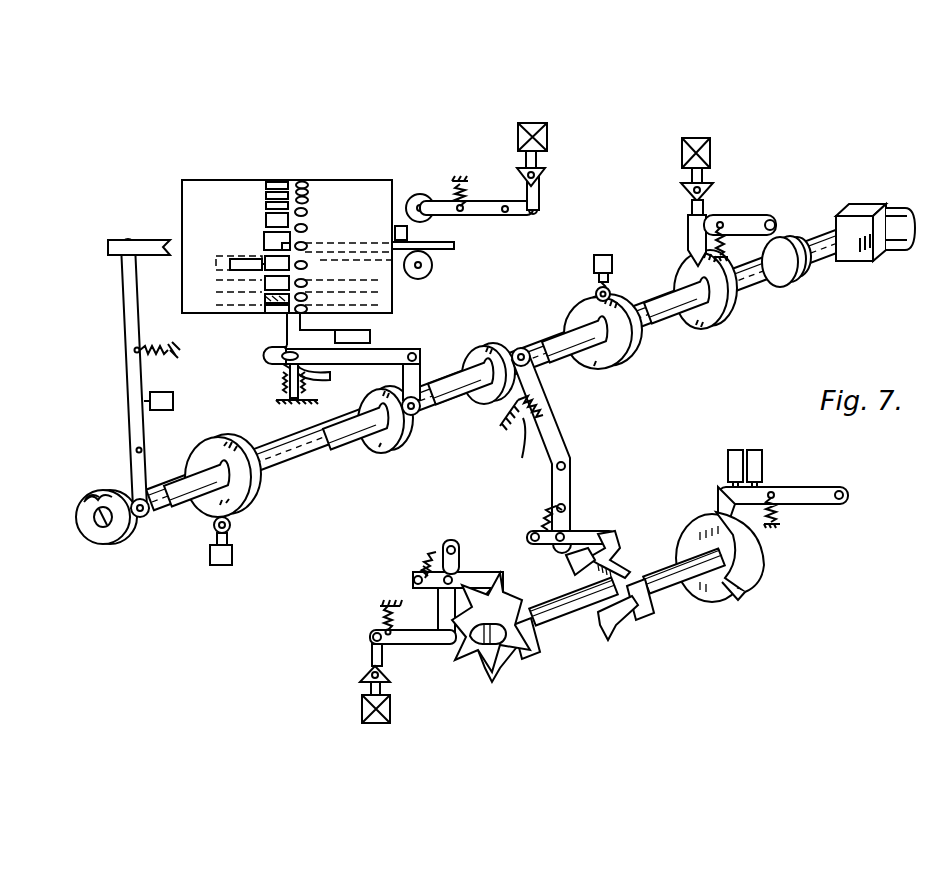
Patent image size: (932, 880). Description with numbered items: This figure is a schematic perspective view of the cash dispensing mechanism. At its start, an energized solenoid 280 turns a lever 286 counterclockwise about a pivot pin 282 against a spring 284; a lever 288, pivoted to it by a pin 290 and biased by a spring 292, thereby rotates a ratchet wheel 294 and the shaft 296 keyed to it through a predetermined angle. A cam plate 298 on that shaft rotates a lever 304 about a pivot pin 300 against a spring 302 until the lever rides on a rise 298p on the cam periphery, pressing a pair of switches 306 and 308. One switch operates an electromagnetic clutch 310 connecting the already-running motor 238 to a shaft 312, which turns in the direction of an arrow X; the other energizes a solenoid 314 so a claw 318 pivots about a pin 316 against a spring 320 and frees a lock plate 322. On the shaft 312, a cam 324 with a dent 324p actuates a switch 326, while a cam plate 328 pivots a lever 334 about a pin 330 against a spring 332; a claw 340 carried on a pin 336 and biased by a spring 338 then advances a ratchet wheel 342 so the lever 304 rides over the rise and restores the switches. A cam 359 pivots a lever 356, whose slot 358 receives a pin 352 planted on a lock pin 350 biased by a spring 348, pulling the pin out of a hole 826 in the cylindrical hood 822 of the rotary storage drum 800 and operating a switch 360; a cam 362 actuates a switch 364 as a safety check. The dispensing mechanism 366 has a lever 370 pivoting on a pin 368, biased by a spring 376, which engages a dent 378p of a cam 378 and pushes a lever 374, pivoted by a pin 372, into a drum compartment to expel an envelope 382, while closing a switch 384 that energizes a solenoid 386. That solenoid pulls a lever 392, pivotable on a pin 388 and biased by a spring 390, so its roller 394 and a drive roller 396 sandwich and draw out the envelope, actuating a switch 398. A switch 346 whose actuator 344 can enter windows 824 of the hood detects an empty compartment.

The motor 238 is at (860, 262).
The solenoid 280 is at (390, 710).
The pivot pin 282 is at (452, 657).
The spring 284 is at (378, 624).
The lever 286 is at (420, 648).
The lever 288 is at (478, 588).
The pin 290 is at (460, 556).
The spring 292 is at (425, 578).
The ratchet wheel 294 is at (515, 674).
The shaft 296 is at (548, 634).
The cam plate 298 is at (715, 594).
The rise 298p is at (762, 562).
The pivot pin 300 is at (845, 496).
The spring 302 is at (782, 520).
The lever 304 is at (822, 480).
The switch 306 is at (728, 470).
The switch 308 is at (762, 467).
The electromagnetic clutch 310 is at (805, 274).
The shaft 312 is at (650, 332).
The solenoid 314 is at (712, 152).
The pin 316 is at (775, 220).
The claw 318 is at (688, 238).
The spring 320 is at (742, 236).
The lock plate 322 is at (734, 322).
The cam 324 is at (612, 366).
The dent 324p is at (592, 298).
The switch 326 is at (593, 264).
The cam plate 328 is at (486, 404).
The pin 330 is at (570, 462).
The spring 332 is at (522, 456).
The lever 334 is at (560, 442).
The pin 336 is at (562, 533).
The spring 338 is at (545, 530).
The claw 340 is at (614, 534).
The ratchet wheel 342 is at (618, 624).
The actuator 344 is at (272, 262).
The switch 346 is at (240, 266).
The spring 348 is at (280, 396).
The lock pin 350 is at (284, 344).
The pin 352 is at (418, 358).
The lever 356 is at (425, 354).
The slot 358 is at (305, 370).
The cam 359 is at (385, 452).
The switch 360 is at (372, 338).
The cam 362 is at (252, 492).
The switch 364 is at (212, 558).
The cash envelope dispensing mechanism 366 is at (124, 380).
The pin 368 is at (143, 453).
The lever 370 is at (133, 427).
The pin 372 is at (127, 243).
The lever 374 is at (160, 238).
The spring 376 is at (152, 356).
The cam 378 is at (120, 537).
The dent 378p is at (95, 505).
The envelope 382 is at (268, 294).
The switch 384 is at (173, 401).
The solenoid 386 is at (548, 135).
The pin 388 is at (505, 213).
The spring 390 is at (470, 190).
The lever 392 is at (540, 218).
The roller 394 is at (420, 195).
The drive roller 396 is at (433, 269).
The switch 398 is at (407, 235).
The rotary storage drum 800 is at (364, 165).
The cylindrical hood 822 is at (372, 187).
The windows 824 is at (275, 215).
The holes 826 is at (308, 213).
The arrow X is at (772, 274).